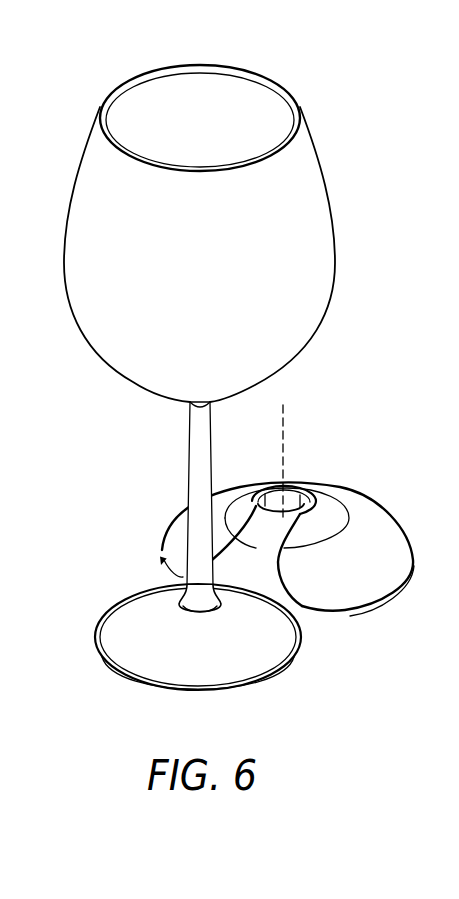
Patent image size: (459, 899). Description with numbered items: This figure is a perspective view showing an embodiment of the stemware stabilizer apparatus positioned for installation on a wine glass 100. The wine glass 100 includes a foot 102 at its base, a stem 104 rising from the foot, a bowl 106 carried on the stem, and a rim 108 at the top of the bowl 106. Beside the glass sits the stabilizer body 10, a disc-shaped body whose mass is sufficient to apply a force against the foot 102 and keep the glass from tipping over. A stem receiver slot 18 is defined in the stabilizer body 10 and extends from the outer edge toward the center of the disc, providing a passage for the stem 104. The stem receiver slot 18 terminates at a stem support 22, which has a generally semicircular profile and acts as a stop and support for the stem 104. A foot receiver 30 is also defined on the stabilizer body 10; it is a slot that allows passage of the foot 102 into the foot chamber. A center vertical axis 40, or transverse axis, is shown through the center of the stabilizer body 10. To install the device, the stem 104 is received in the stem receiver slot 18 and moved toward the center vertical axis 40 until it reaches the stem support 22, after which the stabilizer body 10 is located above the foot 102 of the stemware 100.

The stabilizer body 10 is at (306, 553).
The stem receiver slot 18 is at (268, 545).
The stem support 22 is at (291, 492).
The foot receiver 30 is at (348, 606).
The center vertical axis 40 is at (283, 412).
The wine glass 100 is at (209, 359).
The foot 102 is at (136, 620).
The stem 104 is at (188, 432).
The bowl 106 is at (326, 190).
The rim 108 is at (278, 93).